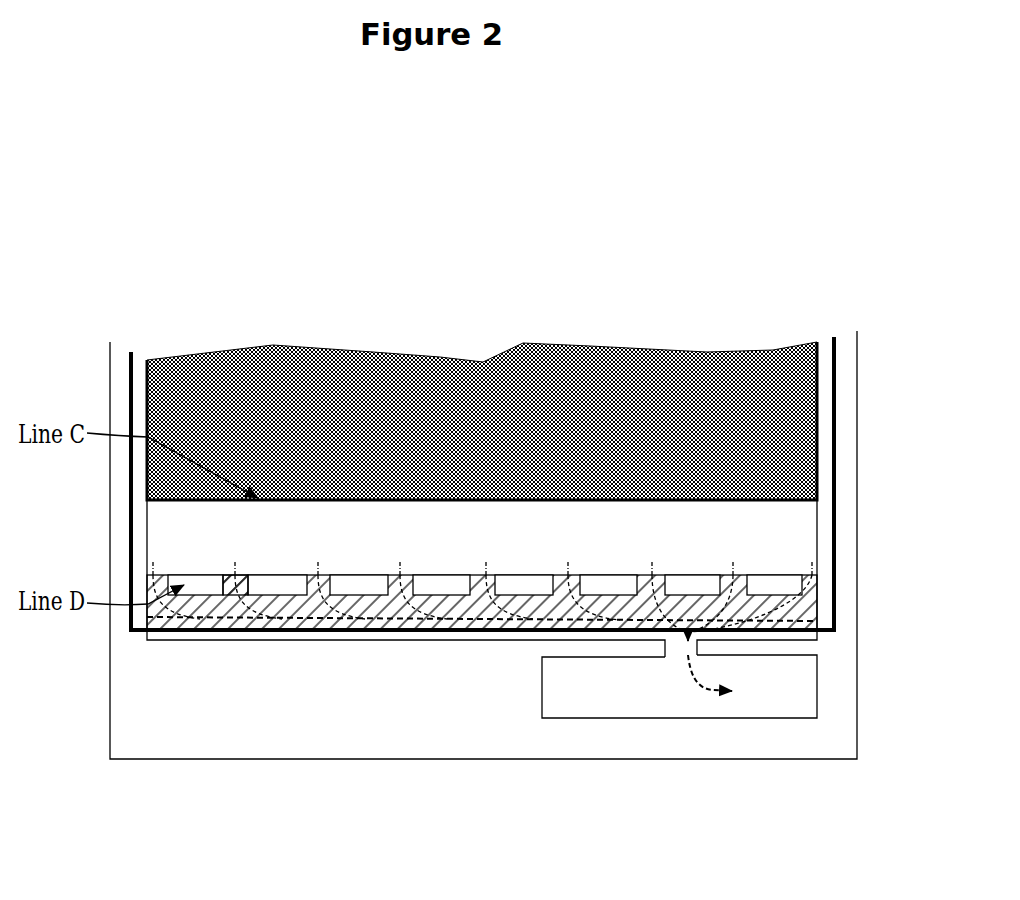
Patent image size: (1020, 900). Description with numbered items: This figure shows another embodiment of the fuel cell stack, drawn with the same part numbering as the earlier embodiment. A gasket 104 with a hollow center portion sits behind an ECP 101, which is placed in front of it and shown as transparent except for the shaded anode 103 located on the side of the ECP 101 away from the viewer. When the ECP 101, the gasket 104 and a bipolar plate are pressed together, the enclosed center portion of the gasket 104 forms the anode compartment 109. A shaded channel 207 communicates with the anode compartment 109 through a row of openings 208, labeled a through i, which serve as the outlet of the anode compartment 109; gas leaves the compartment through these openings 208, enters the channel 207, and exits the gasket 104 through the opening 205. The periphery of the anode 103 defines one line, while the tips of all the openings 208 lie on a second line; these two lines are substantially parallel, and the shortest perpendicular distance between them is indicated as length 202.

The ECP 101 is at (135, 618).
The anode 103 is at (203, 363).
The gasket 104 is at (136, 726).
The anode compartment 109 is at (735, 525).
The shortest distance between Line C and Line D 202 is at (123, 580).
The opening 205 is at (672, 655).
The channel 207 is at (528, 620).
The openings 208 is at (227, 595).